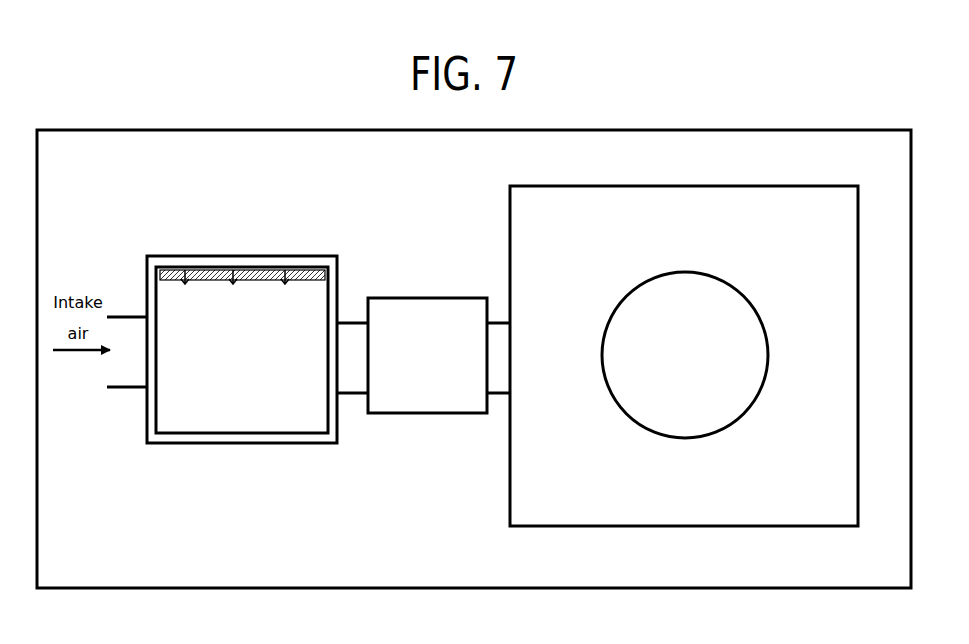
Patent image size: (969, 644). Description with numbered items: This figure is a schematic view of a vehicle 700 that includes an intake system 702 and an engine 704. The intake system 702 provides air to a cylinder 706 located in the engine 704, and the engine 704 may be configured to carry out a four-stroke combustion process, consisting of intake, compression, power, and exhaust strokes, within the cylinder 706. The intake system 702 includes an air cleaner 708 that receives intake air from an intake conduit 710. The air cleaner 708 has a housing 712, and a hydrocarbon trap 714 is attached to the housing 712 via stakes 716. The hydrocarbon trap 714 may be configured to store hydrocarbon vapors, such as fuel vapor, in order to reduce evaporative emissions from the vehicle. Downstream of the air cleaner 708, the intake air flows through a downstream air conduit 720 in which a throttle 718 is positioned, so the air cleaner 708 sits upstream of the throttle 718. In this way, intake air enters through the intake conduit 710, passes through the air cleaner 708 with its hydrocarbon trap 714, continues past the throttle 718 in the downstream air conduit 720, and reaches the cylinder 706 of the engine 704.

The vehicle 700 is at (41, 129).
The intake system 702 is at (112, 193).
The engine 704 is at (515, 185).
The cylinder 706 is at (682, 272).
The air cleaner 708 is at (238, 236).
The intake conduit 710 is at (127, 389).
The housing 712 is at (155, 256).
The hydrocarbon trap 714 is at (314, 280).
The stakes 716 is at (190, 284).
The throttle 718 is at (372, 297).
The downstream air conduit 720 is at (355, 396).